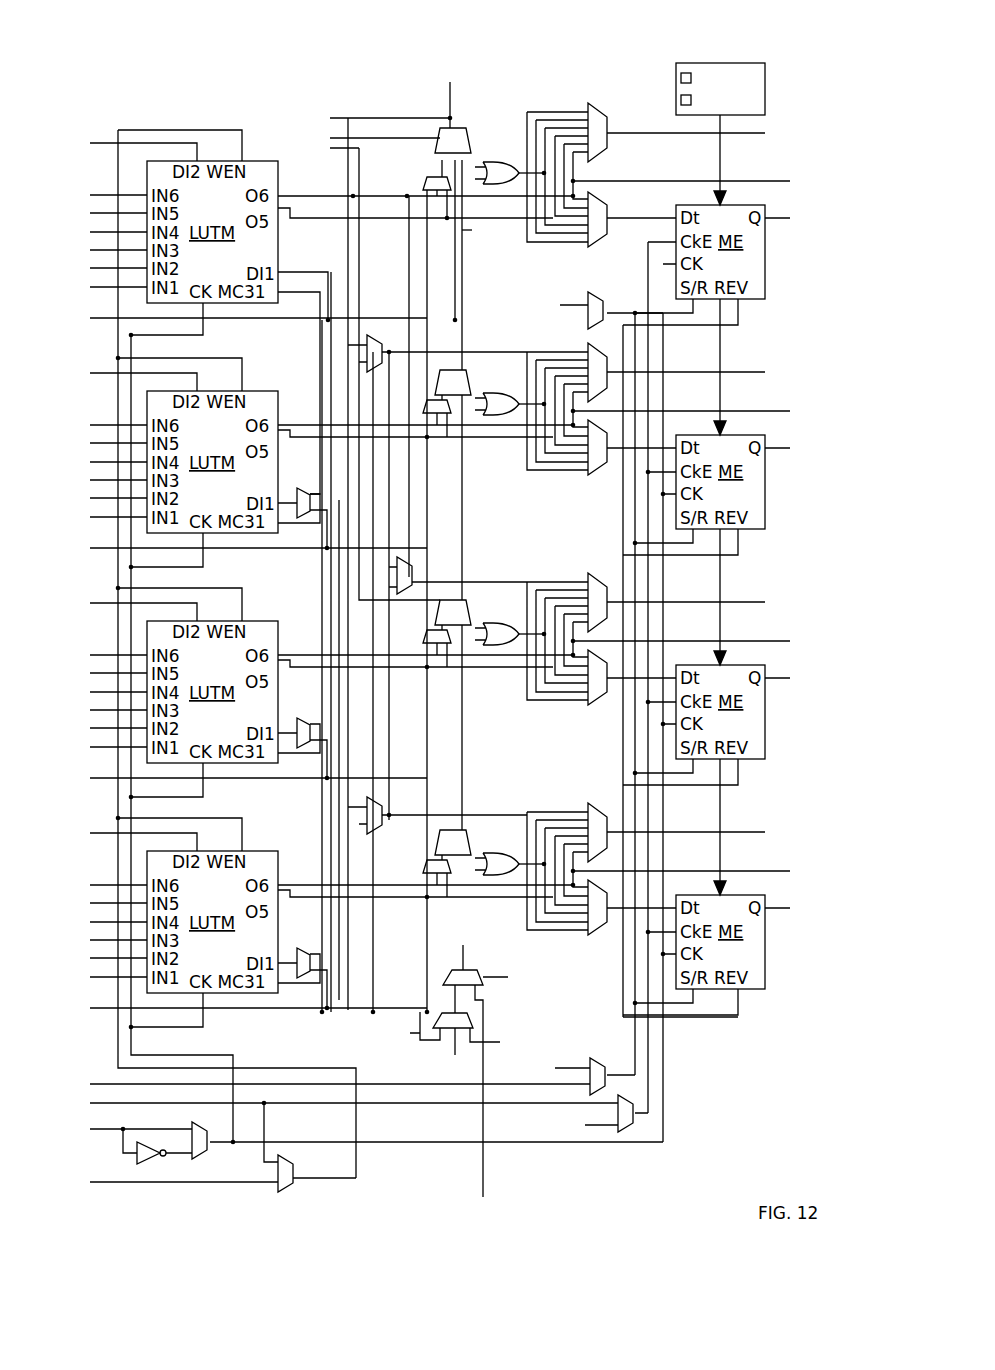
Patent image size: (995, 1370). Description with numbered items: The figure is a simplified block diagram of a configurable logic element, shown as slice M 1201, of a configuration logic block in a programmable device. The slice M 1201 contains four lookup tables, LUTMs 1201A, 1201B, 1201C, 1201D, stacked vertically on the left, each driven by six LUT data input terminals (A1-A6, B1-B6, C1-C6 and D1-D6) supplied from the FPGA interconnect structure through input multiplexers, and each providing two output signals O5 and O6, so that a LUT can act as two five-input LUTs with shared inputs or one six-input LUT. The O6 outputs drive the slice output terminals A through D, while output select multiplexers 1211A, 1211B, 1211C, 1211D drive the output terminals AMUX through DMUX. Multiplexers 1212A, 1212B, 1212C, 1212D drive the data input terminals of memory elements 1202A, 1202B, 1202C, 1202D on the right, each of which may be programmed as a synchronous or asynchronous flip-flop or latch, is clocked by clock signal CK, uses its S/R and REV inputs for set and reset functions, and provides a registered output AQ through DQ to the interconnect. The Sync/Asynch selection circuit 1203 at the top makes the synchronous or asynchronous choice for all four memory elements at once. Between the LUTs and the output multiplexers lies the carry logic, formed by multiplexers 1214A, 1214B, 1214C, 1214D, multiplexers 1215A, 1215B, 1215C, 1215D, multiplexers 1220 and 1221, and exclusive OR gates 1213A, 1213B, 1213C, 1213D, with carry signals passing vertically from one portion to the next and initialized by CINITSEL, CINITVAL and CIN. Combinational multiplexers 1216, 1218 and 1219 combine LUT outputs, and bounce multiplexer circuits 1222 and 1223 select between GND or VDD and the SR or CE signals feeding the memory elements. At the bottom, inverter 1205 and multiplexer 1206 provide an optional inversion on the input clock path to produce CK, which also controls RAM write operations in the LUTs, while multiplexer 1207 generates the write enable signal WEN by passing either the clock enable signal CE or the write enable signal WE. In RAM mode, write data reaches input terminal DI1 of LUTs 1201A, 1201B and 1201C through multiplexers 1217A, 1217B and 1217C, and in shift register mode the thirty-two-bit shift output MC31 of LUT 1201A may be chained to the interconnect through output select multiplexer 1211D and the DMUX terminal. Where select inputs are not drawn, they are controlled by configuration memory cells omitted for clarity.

The slice M 1201 is at (184, 110).
The lookup table (LUTM) 1201D is at (315, 312).
The lookup table (LUTM) 1201C is at (315, 463).
The lookup table (LUTM) 1201B is at (315, 693).
The lookup table (LUTM) 1201A is at (315, 923).
The memory element 1202D is at (723, 265).
The memory element 1202C is at (723, 427).
The memory element 1202B is at (723, 657).
The memory element 1202A is at (723, 887).
The Sync/Asynch selection circuit 1203 is at (676, 96).
The inverter 1205 is at (125, 1165).
The multiplexer 1206 is at (207, 1152).
The multiplexer 1207 is at (285, 1192).
The output select multiplexer 1211D is at (607, 148).
The output select multiplexer 1211C is at (590, 346).
The output select multiplexer 1211B is at (676, 627).
The output select multiplexer 1211A is at (676, 857).
The multiplexer 1212D is at (605, 205).
The multiplexer 1212C is at (603, 478).
The multiplexer 1212B is at (601, 692).
The multiplexer 1212A is at (601, 922).
The exclusive OR gate 1213D is at (500, 155).
The exclusive OR gate 1213C is at (500, 386).
The exclusive OR gate 1213B is at (508, 621).
The exclusive OR gate 1213A is at (508, 851).
The carry logic multiplexer 1214D is at (455, 128).
The carry logic multiplexer 1214C is at (445, 370).
The carry logic multiplexer 1214B is at (439, 591).
The carry logic multiplexer 1214A is at (433, 821).
The carry logic multiplexer 1215D is at (430, 190).
The carry logic multiplexer 1215C is at (447, 415).
The carry logic multiplexer 1215B is at (474, 663).
The carry logic multiplexer 1215A is at (474, 893).
The combinational multiplexer 1216 is at (375, 335).
The multiplexer 1217C is at (303, 520).
The multiplexer 1217B is at (270, 763).
The multiplexer 1217A is at (270, 993).
The combinational multiplexer 1218 is at (398, 580).
The combinational multiplexer 1219 is at (378, 833).
The carry logic multiplexer 1220 is at (478, 1016).
The carry logic multiplexer 1221 is at (594, 296).
The bounce multiplexer circuit 1222 is at (600, 1052).
The bounce multiplexer circuit 1223 is at (628, 1135).